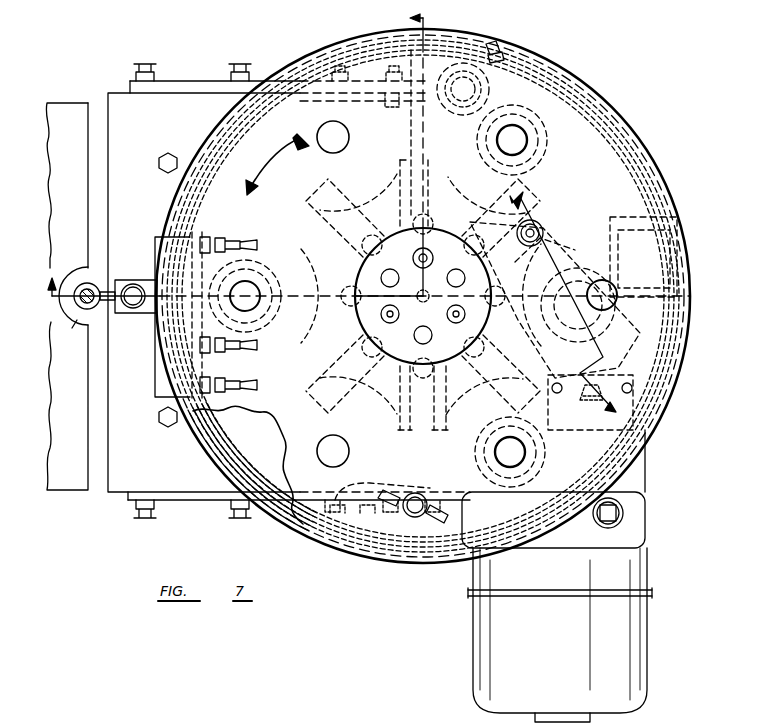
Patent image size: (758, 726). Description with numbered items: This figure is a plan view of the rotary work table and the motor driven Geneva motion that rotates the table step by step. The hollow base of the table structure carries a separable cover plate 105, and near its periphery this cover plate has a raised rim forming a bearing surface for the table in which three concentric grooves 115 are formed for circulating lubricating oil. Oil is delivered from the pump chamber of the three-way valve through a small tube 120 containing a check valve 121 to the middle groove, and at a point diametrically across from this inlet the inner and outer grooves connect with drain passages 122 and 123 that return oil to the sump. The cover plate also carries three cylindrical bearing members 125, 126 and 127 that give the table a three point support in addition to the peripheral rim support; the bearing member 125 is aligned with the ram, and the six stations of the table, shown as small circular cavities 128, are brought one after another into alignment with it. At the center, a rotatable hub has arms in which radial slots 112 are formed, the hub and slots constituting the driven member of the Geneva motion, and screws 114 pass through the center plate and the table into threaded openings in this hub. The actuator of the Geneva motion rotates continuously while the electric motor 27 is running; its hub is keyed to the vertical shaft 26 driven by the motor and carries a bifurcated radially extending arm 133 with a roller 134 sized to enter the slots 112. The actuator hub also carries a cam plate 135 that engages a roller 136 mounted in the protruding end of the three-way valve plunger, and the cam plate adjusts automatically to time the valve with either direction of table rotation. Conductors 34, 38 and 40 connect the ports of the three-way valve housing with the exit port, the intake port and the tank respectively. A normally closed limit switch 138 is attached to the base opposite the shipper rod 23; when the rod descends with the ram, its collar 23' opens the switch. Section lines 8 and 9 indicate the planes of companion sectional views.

The section line 8- 8 is at (367, 153).
The section line 9- 9 is at (569, 296).
The shipper rod 23 is at (90, 285).
The collar 23' is at (73, 334).
The vertical shaft 26 is at (583, 255).
The electric motor 27 is at (647, 652).
The conductor 34 is at (252, 348).
The conductor 38 is at (258, 391).
The conductor 40 is at (240, 243).
The cover plate 105 is at (240, 436).
The radial slots 112 is at (318, 210).
The screws 114 is at (427, 257).
The concentric grooves 115 is at (248, 470).
The tube 120 is at (452, 522).
The check valve 121 is at (416, 520).
The drain passage 122 is at (498, 68).
The drain passage 123 is at (502, 62).
The cylindrical bearing member 125 is at (270, 290).
The cylindrical bearing member 126 is at (545, 148).
The cylindrical bearing member 127 is at (507, 437).
The circular cavities 128 is at (332, 152).
The bifurcated radially extending arm 133 is at (550, 242).
The roller 134 is at (537, 222).
The cam plate 135 is at (630, 332).
The roller 136 is at (548, 396).
The limit switch 138 is at (128, 305).